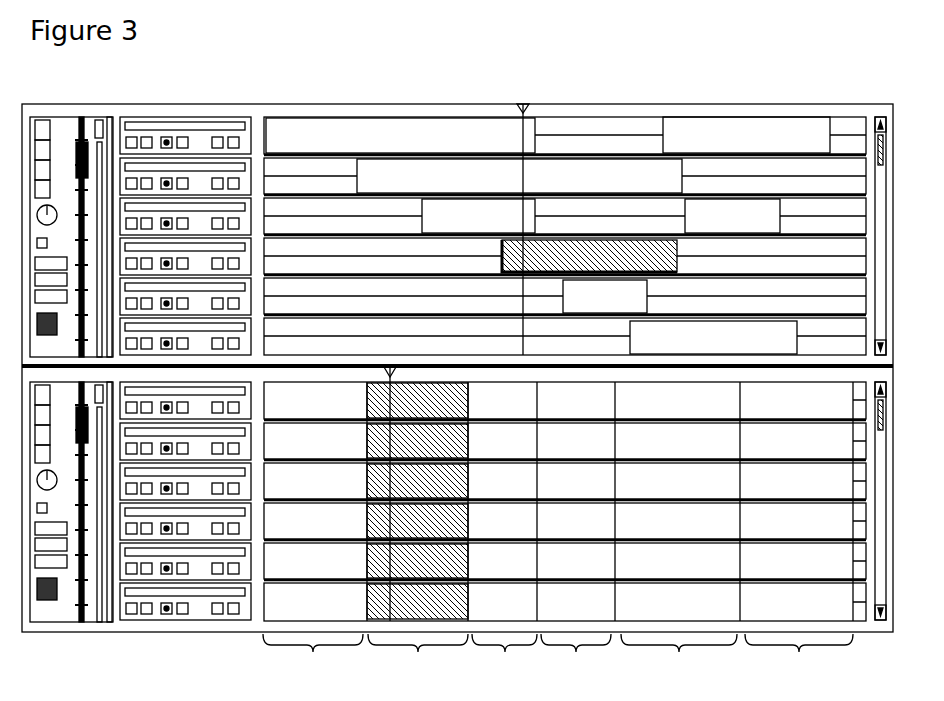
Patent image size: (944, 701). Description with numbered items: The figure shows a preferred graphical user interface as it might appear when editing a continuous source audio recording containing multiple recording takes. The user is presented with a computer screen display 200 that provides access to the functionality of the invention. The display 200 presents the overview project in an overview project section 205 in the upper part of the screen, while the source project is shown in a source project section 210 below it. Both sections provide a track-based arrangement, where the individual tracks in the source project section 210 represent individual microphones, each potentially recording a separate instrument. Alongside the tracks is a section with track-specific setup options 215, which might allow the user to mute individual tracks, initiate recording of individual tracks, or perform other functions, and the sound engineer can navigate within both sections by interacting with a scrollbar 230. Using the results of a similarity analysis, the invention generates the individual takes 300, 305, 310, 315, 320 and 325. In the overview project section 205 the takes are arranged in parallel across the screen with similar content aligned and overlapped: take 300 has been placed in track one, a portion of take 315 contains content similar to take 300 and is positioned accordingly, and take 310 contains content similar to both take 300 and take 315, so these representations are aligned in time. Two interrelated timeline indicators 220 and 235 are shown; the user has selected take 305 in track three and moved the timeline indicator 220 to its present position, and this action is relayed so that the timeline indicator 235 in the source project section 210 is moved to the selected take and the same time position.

The computer screen display 200 is at (673, 95).
The overview project section 205 is at (117, 120).
The source project section 210 is at (112, 625).
The track-specific setup options 215 is at (207, 125).
The timeline indicator 220 is at (523, 103).
The scrollbar 230 is at (879, 112).
The timeline indicator 235 is at (390, 367).
The take 300 is at (510, 136).
The take 305 is at (502, 250).
The take 310 is at (422, 208).
The take 315 is at (357, 168).
The take 320 is at (563, 300).
The take 325 is at (760, 320).